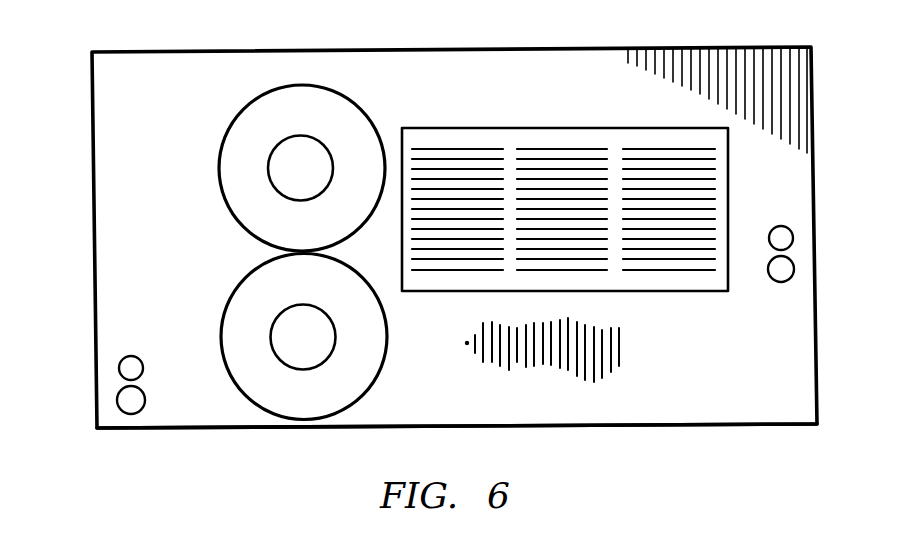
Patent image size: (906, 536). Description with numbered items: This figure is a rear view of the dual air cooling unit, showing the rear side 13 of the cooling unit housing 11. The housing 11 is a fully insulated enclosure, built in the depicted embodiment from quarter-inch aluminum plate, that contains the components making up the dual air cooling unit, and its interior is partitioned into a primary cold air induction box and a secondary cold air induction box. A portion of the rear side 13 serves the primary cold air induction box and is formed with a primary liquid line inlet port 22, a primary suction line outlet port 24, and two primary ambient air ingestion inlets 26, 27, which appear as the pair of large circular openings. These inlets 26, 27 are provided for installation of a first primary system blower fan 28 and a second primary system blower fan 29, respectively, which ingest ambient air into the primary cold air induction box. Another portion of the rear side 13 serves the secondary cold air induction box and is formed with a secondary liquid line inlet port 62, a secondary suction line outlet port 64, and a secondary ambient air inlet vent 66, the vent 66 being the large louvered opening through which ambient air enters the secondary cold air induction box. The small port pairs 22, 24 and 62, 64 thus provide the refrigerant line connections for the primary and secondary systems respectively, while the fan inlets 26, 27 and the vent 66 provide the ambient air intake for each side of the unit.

The cooling unit housing 11 is at (92, 66).
The rear side 13 is at (108, 227).
The primary liquid line inlet port 22 is at (119, 362).
The primary suction line outlet port 24 is at (117, 397).
The primary ambient air ingestion inlet 26 is at (226, 131).
The primary ambient air ingestion inlet 27 is at (228, 298).
The first primary system blower fan 28 is at (268, 168).
The second primary system blower fan 29 is at (285, 367).
The secondary liquid line inlet port 62 is at (793, 235).
The secondary suction line outlet port 64 is at (794, 266).
The secondary ambient air inlet vent 66 is at (557, 128).